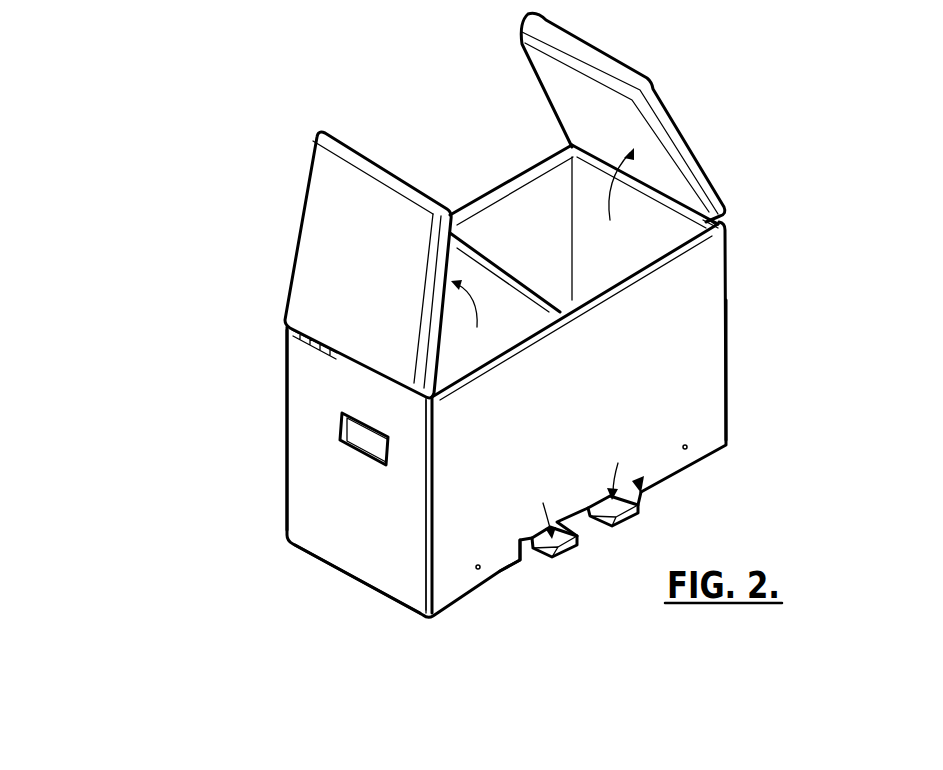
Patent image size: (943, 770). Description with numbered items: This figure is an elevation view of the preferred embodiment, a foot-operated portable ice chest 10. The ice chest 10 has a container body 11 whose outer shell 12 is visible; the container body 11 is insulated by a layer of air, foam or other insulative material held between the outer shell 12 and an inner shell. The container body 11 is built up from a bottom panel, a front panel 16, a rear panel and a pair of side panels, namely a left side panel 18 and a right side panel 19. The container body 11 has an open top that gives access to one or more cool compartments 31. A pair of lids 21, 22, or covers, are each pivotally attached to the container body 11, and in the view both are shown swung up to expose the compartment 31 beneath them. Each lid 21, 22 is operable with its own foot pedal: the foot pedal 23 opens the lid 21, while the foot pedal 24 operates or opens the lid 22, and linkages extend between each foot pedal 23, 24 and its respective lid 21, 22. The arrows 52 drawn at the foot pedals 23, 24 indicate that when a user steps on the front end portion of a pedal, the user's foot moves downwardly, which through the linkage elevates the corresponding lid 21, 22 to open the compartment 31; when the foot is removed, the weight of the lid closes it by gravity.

The portable ice chest 10 is at (198, 156).
The container body 11 is at (712, 378).
The outer shell 12 is at (363, 522).
The front panel 16 is at (546, 424).
The left side panel 18 is at (348, 498).
The right side panel 19 is at (735, 282).
The lid 21 is at (325, 252).
The lid 22 is at (624, 64).
The foot pedal 23 is at (565, 557).
The foot pedal 24 is at (632, 515).
The cool compartment 31 is at (512, 220).
The arrow 52 is at (612, 478).